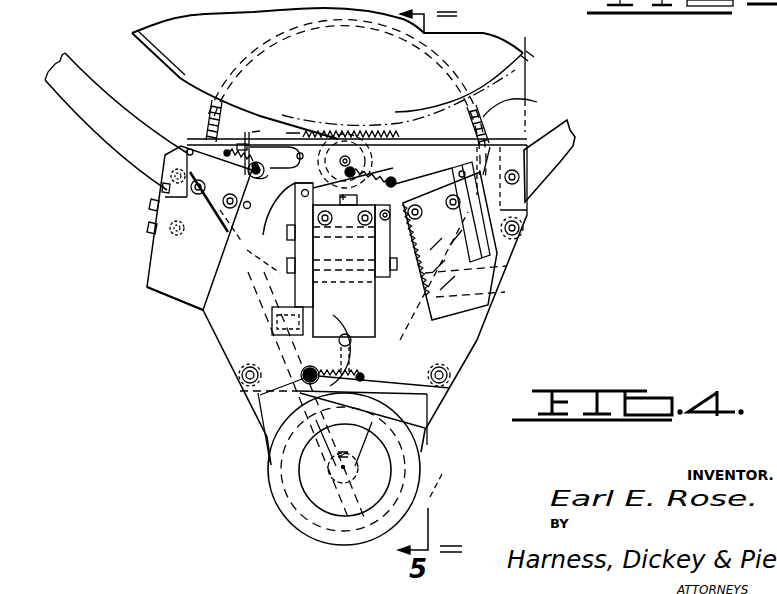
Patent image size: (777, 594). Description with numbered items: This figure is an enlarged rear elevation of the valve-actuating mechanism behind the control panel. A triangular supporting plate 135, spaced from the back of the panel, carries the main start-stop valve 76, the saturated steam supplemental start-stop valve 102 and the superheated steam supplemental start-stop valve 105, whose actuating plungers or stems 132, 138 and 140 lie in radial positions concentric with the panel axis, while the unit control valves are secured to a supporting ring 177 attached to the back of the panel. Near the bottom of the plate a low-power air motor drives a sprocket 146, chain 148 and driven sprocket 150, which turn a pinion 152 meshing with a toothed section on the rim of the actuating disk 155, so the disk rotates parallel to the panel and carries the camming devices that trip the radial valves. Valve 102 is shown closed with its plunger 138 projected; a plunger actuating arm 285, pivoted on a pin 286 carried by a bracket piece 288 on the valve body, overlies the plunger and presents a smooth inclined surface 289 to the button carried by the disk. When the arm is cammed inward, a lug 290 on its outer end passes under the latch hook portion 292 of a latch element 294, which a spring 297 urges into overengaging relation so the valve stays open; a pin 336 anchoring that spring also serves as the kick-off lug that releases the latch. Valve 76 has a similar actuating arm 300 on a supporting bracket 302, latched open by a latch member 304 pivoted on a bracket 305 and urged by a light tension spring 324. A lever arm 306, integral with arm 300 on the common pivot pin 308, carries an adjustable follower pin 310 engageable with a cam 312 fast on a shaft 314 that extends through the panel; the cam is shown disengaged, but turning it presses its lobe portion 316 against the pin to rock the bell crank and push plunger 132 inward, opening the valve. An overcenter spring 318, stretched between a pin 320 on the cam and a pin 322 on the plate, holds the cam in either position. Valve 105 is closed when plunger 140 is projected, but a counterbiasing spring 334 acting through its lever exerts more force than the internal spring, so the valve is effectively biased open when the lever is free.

The start-stop valve 76 is at (377, 298).
The saturated steam supplemental start-stop valve 102 is at (152, 291).
The superheated steam supplemental start-stop valve 105 is at (490, 306).
The plunger 132 is at (360, 198).
The triangular supporting plate 135 is at (467, 354).
The actuating stem 138 is at (210, 210).
The actuating stem 140 is at (448, 256).
The sprocket 146 is at (421, 448).
The chain 148 is at (505, 292).
The driven sprocket 150 is at (506, 266).
The pinion 152 is at (345, 136).
The actuating disk 155 is at (524, 58).
The supporting ring 177 is at (560, 163).
The plunger actuating arm 285 is at (241, 135).
The pin 286 is at (191, 148).
The bracket piece 288 is at (160, 207).
The inclined surface 289 is at (238, 133).
The lug 290 is at (276, 132).
The latch hook portion 292 is at (300, 156).
The latch element 294 is at (270, 180).
The spring 297 is at (258, 156).
The actuating arm 300 is at (363, 136).
The supporting bracket 302 is at (318, 250).
The latch member 304 is at (400, 184).
The bracket 305 is at (410, 252).
The lever arm 306 is at (283, 285).
The pivot pin 308 is at (287, 236).
The adjustable follower pin 310 is at (280, 345).
The cam 312 is at (395, 334).
The shaft 314 is at (406, 350).
The lobe portion 316 is at (445, 393).
The overcenter spring 318 is at (333, 384).
The pin 320 is at (430, 427).
The pin 322 is at (260, 394).
The tension spring 324 is at (382, 172).
The counterbiasing spring 334 is at (310, 293).
The pin 336 is at (229, 158).